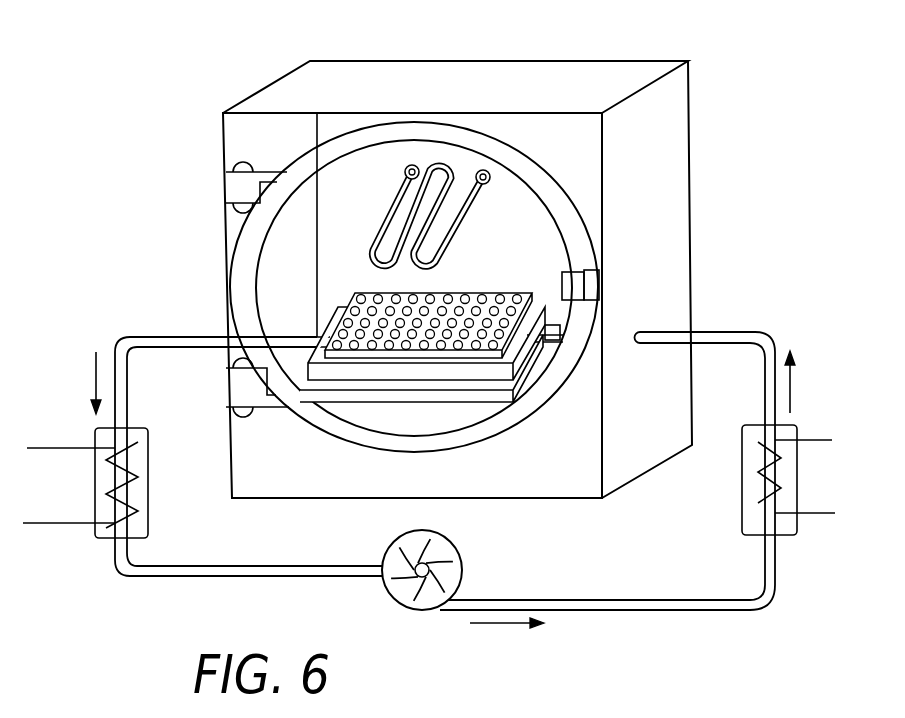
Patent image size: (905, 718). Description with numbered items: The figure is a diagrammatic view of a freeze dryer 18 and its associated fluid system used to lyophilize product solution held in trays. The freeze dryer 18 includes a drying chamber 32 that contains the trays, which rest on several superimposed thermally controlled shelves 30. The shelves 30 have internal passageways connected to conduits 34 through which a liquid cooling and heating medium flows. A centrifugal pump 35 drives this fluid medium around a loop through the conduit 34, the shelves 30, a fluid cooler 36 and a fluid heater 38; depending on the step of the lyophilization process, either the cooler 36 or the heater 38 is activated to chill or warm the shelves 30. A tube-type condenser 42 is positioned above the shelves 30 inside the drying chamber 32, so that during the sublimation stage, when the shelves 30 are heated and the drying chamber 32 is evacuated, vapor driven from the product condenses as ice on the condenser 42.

The freeze dryer 18 is at (724, 232).
The thermally controlled shelves 30 is at (463, 370).
The drying chamber 32 is at (365, 165).
The conduits 34 is at (167, 337).
The centrifugal pump 35 is at (459, 547).
The fluid cooler 36 is at (147, 472).
The fluid heater 38 is at (742, 525).
The tube-type condenser 42 is at (455, 232).